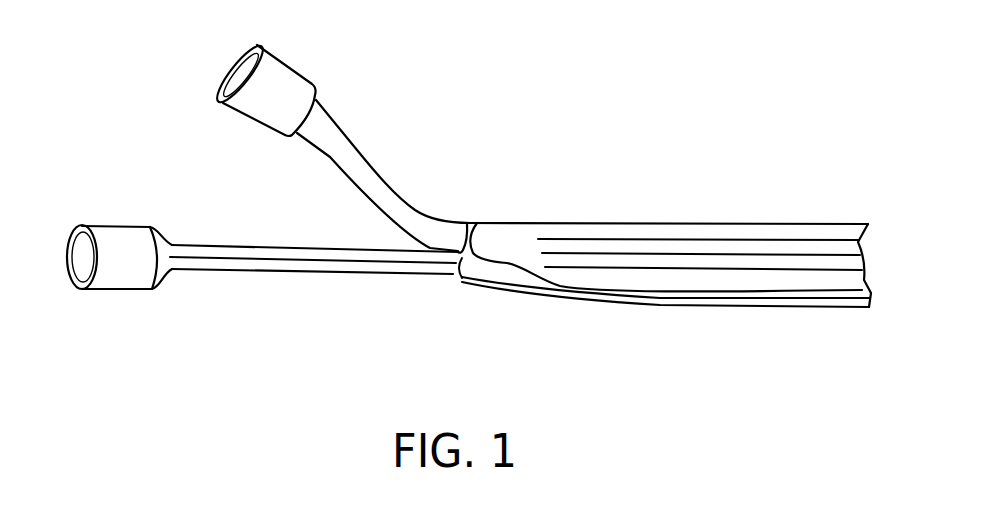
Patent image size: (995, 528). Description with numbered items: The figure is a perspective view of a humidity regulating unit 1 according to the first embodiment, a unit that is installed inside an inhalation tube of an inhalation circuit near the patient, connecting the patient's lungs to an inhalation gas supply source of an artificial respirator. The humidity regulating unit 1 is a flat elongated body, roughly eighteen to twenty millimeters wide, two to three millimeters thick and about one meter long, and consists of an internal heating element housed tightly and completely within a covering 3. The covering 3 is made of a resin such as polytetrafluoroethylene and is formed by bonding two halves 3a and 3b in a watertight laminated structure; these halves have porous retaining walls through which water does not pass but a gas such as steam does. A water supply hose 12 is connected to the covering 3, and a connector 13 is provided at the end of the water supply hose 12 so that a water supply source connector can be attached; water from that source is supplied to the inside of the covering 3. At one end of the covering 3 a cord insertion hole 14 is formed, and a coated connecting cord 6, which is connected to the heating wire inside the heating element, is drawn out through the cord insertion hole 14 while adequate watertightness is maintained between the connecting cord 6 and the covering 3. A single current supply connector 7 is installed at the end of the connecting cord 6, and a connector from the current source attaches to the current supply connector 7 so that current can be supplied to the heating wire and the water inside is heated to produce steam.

The humidity regulating unit 1 is at (648, 105).
The covering 3 is at (498, 347).
The half of covering 3a is at (548, 297).
The half of covering 3b is at (503, 270).
The connecting cord 6 is at (278, 265).
The current supply connector 7 is at (133, 262).
The water supply hose 12 is at (375, 192).
The connector 13 is at (293, 88).
The cord insertion hole 14 is at (453, 265).